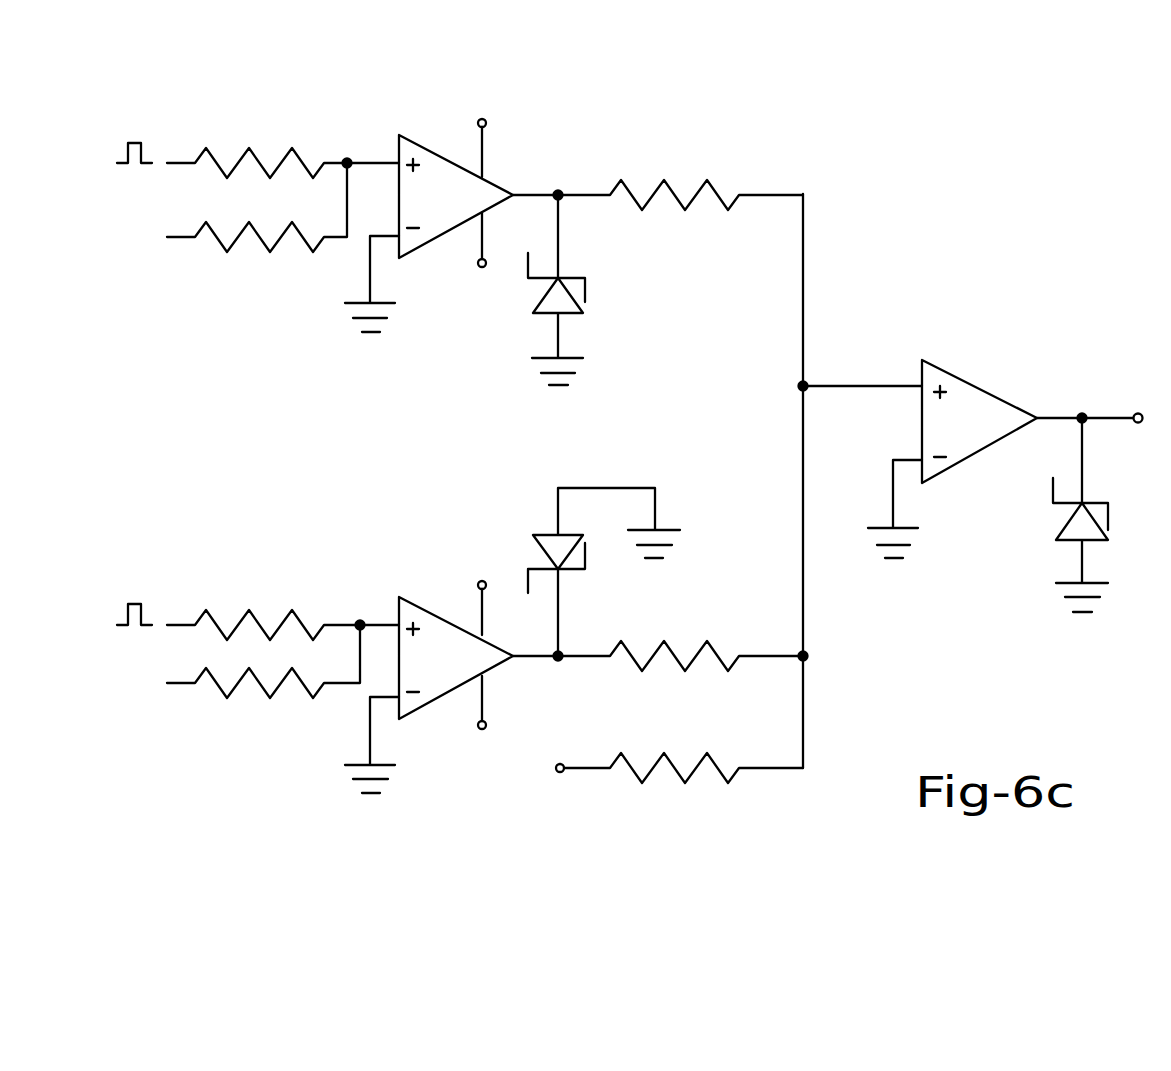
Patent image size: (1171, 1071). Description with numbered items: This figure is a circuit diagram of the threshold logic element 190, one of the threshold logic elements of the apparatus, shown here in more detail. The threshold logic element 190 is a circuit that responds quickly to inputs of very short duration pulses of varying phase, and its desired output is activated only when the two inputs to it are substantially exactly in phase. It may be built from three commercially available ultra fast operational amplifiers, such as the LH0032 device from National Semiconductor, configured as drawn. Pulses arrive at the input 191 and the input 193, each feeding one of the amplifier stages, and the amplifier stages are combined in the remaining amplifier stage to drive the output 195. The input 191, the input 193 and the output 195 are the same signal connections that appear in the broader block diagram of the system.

The threshold logic element 190 is at (866, 176).
The input 191 is at (182, 163).
The input 193 is at (183, 625).
The output 195 is at (1110, 413).